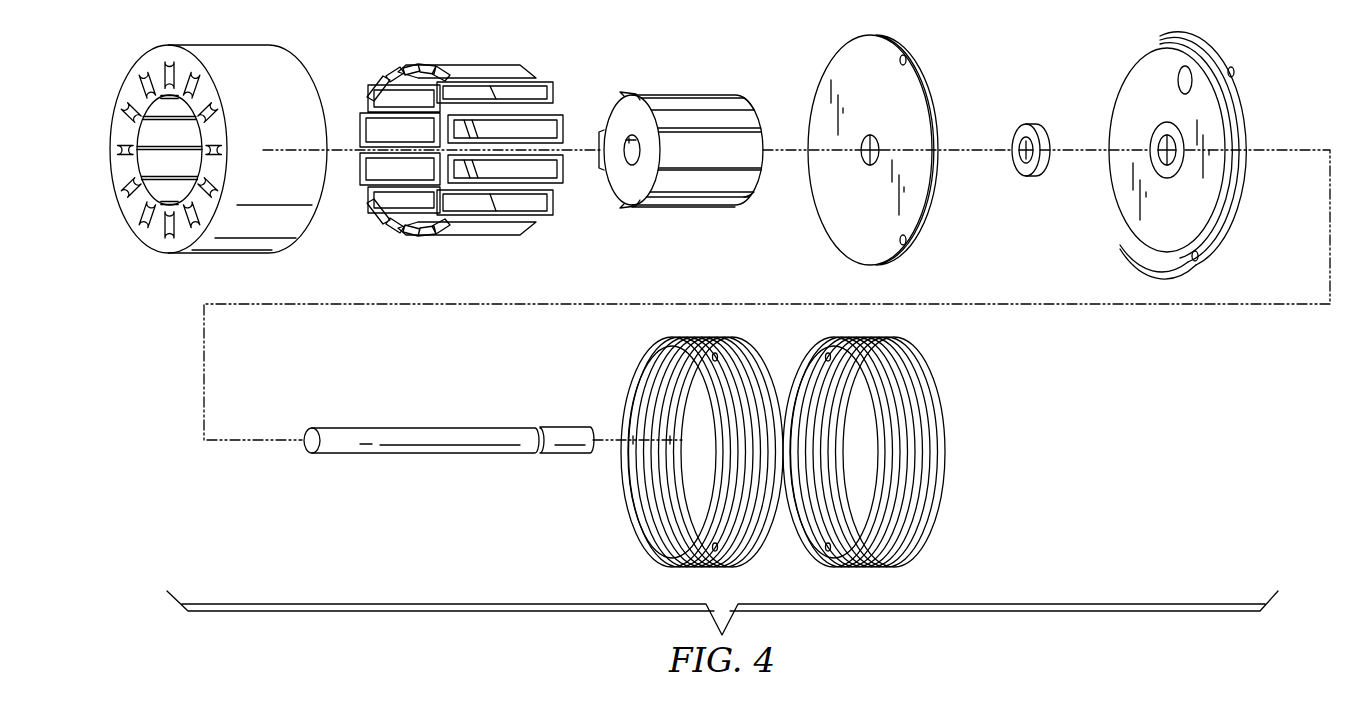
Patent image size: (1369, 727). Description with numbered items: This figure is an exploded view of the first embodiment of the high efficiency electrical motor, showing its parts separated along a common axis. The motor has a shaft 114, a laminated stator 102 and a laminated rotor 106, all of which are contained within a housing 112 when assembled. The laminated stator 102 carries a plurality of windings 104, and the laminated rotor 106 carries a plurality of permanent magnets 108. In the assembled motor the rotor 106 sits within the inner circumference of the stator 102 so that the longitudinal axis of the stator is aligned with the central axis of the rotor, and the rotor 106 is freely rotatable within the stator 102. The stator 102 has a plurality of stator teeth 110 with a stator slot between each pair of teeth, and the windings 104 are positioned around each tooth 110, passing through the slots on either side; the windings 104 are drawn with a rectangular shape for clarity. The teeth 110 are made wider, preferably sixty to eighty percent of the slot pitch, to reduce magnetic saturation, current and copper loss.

The laminated stator 102 is at (229, 143).
The windings 104 is at (398, 78).
The laminated rotor 106 is at (632, 111).
The permanent magnets 108 is at (705, 100).
The stator teeth 110 is at (206, 138).
The housing 112 is at (860, 58).
The shaft 114 is at (355, 444).